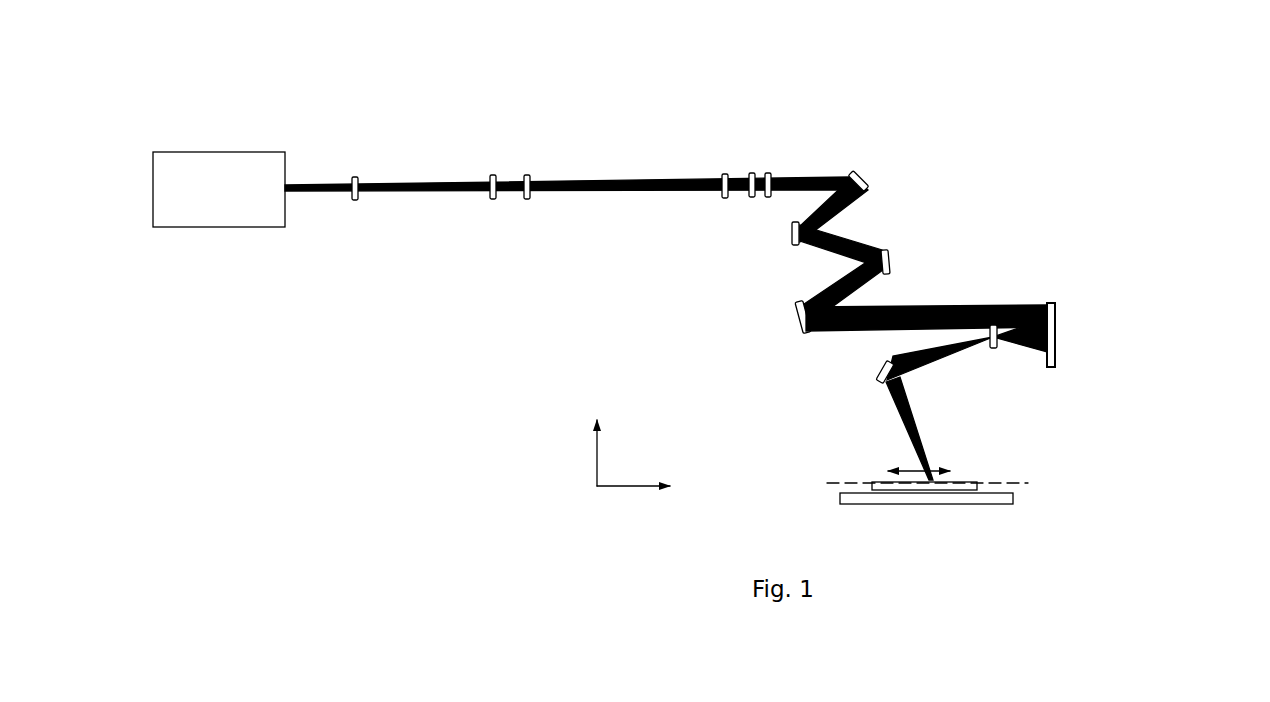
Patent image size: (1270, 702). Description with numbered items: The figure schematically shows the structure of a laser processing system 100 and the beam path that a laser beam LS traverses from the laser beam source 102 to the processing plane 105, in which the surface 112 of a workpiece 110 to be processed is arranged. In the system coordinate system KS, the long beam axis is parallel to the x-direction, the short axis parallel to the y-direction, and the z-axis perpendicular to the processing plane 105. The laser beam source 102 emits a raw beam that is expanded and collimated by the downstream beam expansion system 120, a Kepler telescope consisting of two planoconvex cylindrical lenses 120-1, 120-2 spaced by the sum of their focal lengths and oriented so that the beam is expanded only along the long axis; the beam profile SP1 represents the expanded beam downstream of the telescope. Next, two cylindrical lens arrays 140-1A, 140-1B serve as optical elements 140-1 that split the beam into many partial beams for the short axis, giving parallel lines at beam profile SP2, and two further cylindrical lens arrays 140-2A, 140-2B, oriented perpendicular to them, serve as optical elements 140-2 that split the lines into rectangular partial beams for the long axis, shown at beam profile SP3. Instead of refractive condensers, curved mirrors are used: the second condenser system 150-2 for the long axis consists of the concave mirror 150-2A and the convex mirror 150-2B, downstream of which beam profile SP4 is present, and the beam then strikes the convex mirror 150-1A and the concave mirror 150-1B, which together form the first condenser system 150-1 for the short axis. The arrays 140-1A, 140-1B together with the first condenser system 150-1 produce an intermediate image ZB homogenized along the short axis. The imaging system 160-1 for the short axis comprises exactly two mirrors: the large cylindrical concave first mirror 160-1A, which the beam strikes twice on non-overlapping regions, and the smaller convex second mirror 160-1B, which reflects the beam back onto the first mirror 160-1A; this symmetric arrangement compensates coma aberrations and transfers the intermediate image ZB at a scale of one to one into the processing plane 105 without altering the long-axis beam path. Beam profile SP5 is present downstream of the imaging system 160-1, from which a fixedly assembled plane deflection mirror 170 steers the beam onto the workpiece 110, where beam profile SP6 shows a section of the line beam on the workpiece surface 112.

The laser processing system 100 is at (320, 393).
The laser beam source 102 is at (215, 172).
The laser beam LS is at (320, 183).
The beam expansion system 120 is at (398, 153).
The planoconvex cylindrical lens 120-1 is at (355, 200).
The planoconvex cylindrical lens 120-2 is at (493, 199).
The beam profile SP1 is at (505, 170).
The optical elements for splitting the laser beam for the short axis 140-1 is at (624, 153).
The cylindrical lens array 140-1A is at (527, 199).
The cylindrical lens array 140-1B is at (728, 197).
The optical elements for splitting the laser beam for the long axis 140-2 is at (760, 104).
The cylindrical lens array 140-2A is at (752, 173).
The cylindrical lens array 140-2B is at (768, 173).
The beam profile SP2 is at (742, 210).
The beam profile SP3 is at (818, 172).
The beam profile SP4 is at (826, 262).
The beam profile SP5 is at (915, 398).
The beam profile SP6 is at (935, 470).
The second condenser system 150-2 is at (826, 226).
The concave mirror 150-2A is at (870, 188).
The convex mirror 150-2B is at (793, 238).
The first condenser system 150-1 is at (841, 302).
The convex mirror 150-1A is at (892, 268).
The concave mirror 150-1B is at (798, 328).
The intermediate image ZB is at (930, 315).
The imaging system 160-1 is at (1019, 329).
The first mirror 160-1A is at (1057, 315).
The second mirror 160-1B is at (990, 340).
The plane deflection mirror 170 is at (878, 373).
The processing plane 105 is at (1015, 483).
The surface of the workpiece 112 is at (880, 483).
The workpiece 110 is at (955, 504).
The system coordinate system KS is at (632, 462).